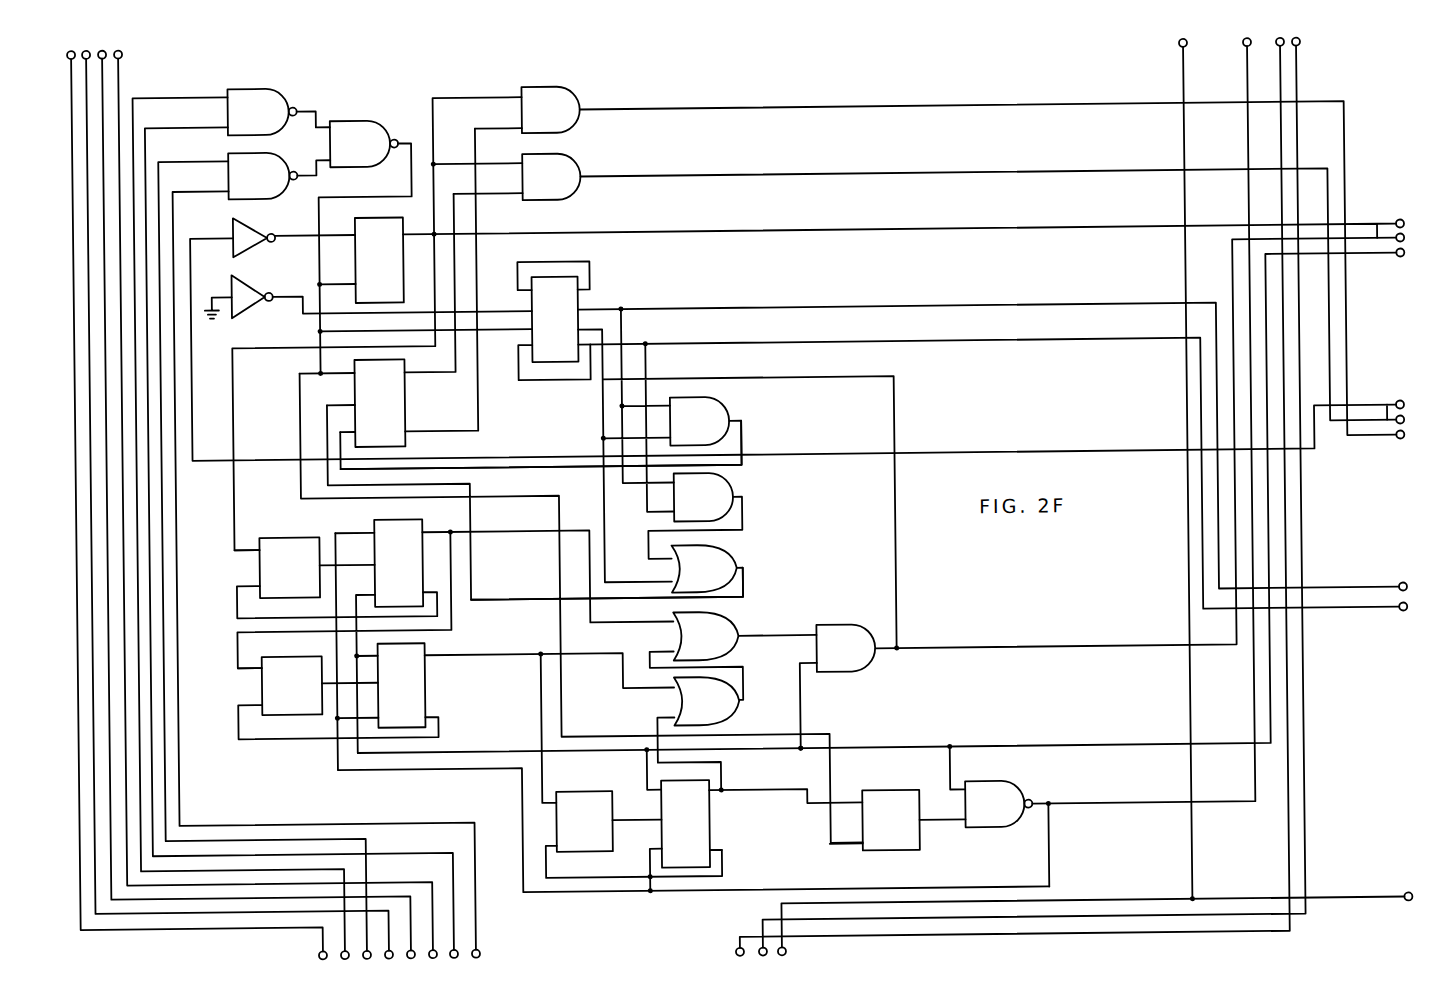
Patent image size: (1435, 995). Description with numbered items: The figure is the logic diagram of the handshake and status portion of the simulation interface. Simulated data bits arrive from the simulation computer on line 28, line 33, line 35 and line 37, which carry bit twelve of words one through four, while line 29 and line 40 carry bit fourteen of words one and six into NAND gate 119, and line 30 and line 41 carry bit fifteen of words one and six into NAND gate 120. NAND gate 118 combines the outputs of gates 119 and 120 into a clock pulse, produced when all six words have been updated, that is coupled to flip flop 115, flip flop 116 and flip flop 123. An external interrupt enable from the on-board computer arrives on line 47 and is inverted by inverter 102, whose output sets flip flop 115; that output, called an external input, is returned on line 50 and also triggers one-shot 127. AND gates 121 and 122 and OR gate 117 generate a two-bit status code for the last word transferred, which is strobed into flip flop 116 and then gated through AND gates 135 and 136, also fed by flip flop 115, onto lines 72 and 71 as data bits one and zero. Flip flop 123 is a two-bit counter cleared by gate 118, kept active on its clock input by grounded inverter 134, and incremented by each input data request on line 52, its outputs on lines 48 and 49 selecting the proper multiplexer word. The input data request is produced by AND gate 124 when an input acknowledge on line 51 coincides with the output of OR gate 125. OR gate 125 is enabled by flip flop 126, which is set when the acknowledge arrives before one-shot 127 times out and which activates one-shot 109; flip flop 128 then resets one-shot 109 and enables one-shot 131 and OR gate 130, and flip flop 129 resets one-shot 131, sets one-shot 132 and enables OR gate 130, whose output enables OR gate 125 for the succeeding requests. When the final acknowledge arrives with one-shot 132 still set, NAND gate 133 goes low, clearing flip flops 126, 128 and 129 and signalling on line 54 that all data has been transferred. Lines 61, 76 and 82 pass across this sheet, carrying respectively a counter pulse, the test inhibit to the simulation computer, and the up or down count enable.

The line 28 is at (73, 53).
The line 29 is at (215, 94).
The line 30 is at (218, 158).
The line 33 is at (88, 55).
The line 35 is at (110, 56).
The line 37 is at (125, 54).
The line 40 is at (218, 124).
The line 41 is at (218, 188).
The line 47 is at (218, 230).
The line 48 is at (754, 308).
The line 49 is at (756, 343).
The line 50 is at (730, 228).
The line 51 is at (1396, 277).
The line 52 is at (1379, 232).
The line 54 is at (1250, 53).
The line 61 is at (755, 946).
The line 71 is at (712, 176).
The line 72 is at (717, 109).
The line 76 is at (733, 953).
The line 82 is at (1401, 900).
The inverter 102 is at (262, 212).
The one-shot 109 is at (288, 657).
The flip flop 115 is at (410, 253).
The flip flop 116 is at (409, 383).
The OR gate 117 is at (733, 562).
The NAND gate 118 is at (368, 122).
The NAND gate 119 is at (278, 97).
The NAND gate 120 is at (277, 160).
The AND gate 121 is at (731, 493).
The AND gate 122 is at (726, 415).
The flip flop 123 is at (585, 302).
The AND gate 124 is at (846, 630).
The OR gate 125 is at (736, 630).
The flip flop 126 is at (420, 526).
The one-shot 127 is at (286, 536).
The flip flop 128 is at (421, 650).
The flip flop 129 is at (703, 819).
The OR gate 130 is at (733, 706).
The one-shot 131 is at (584, 798).
The one-shot 132 is at (885, 799).
The NAND gate 133 is at (1009, 797).
The inverter 134 is at (249, 283).
The AND gate 135 is at (579, 97).
The AND gate 136 is at (578, 164).